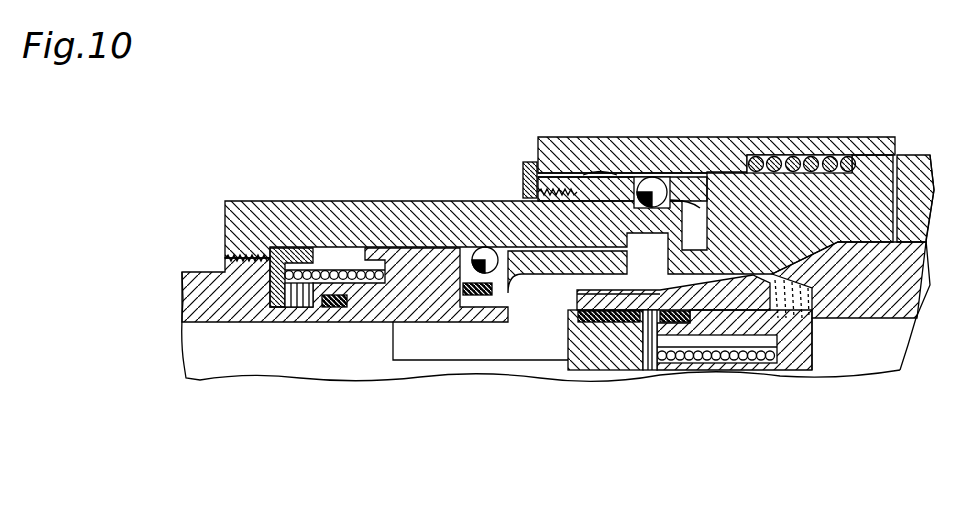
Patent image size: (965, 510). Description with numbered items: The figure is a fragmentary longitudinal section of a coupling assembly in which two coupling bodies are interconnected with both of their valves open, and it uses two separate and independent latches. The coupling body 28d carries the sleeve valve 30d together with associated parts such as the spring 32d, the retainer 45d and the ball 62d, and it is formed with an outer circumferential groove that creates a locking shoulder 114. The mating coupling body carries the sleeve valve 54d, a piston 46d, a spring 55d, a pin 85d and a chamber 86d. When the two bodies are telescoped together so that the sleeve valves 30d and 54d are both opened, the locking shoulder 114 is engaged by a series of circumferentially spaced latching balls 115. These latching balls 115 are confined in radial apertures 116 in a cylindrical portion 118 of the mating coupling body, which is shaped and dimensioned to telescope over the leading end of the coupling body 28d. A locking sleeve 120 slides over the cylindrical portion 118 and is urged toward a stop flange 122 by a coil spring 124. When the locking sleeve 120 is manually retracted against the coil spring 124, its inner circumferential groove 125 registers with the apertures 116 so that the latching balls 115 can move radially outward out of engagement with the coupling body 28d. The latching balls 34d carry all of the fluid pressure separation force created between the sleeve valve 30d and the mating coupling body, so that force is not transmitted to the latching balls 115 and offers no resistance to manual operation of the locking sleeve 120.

The coupling body 28d is at (368, 201).
The sleeve valve 30d is at (390, 297).
The spring 32d is at (327, 270).
The latching balls 34d is at (483, 250).
The retainer 45d is at (320, 313).
The piston 46d is at (618, 357).
The sleeve valve 54d is at (699, 297).
The spring 55d is at (720, 365).
The ball 62d is at (478, 250).
The pin 85d is at (658, 365).
The chamber 86d is at (828, 312).
The locking shoulder 114 is at (718, 172).
The latching balls 115 is at (652, 177).
The radial apertures 116 is at (670, 150).
The cylindrical portion 118 is at (618, 187).
The locking sleeve 120 is at (745, 152).
The stop flange 122 is at (523, 166).
The coil spring 124 is at (810, 155).
The inner circumferential groove 125 is at (584, 172).